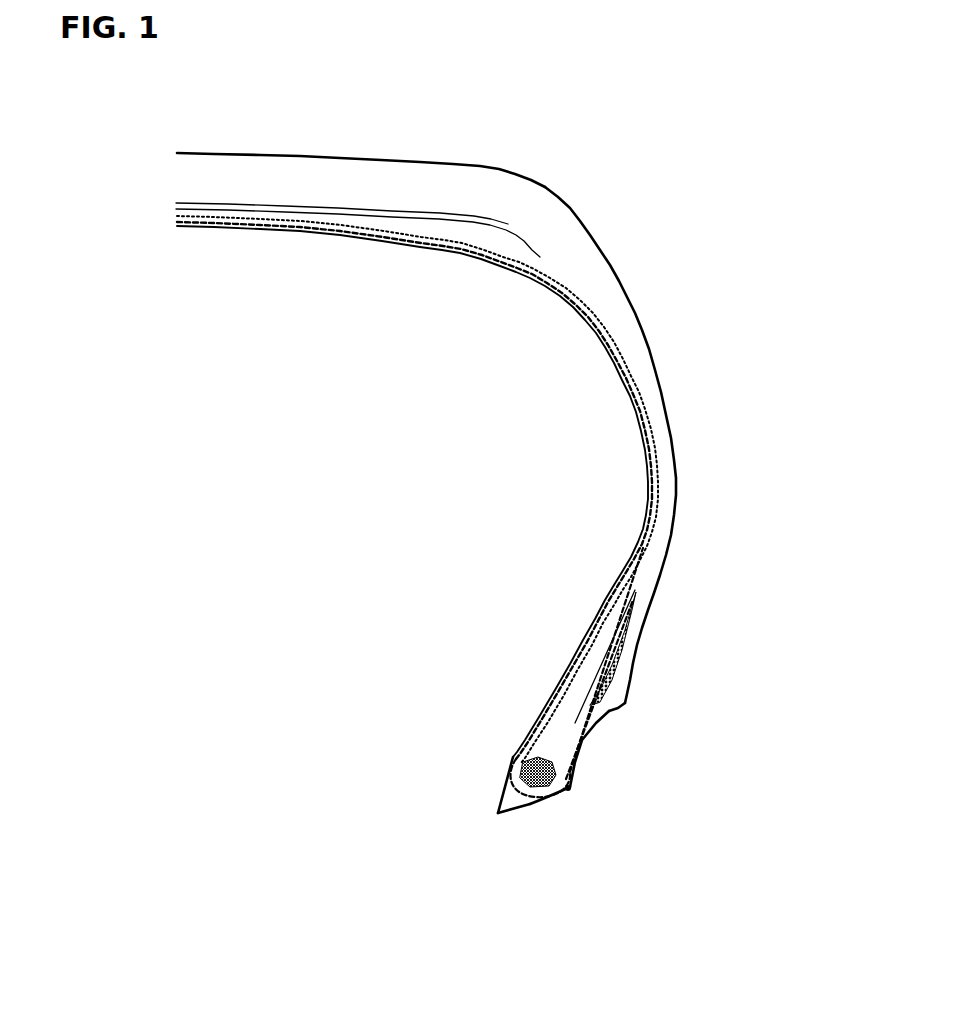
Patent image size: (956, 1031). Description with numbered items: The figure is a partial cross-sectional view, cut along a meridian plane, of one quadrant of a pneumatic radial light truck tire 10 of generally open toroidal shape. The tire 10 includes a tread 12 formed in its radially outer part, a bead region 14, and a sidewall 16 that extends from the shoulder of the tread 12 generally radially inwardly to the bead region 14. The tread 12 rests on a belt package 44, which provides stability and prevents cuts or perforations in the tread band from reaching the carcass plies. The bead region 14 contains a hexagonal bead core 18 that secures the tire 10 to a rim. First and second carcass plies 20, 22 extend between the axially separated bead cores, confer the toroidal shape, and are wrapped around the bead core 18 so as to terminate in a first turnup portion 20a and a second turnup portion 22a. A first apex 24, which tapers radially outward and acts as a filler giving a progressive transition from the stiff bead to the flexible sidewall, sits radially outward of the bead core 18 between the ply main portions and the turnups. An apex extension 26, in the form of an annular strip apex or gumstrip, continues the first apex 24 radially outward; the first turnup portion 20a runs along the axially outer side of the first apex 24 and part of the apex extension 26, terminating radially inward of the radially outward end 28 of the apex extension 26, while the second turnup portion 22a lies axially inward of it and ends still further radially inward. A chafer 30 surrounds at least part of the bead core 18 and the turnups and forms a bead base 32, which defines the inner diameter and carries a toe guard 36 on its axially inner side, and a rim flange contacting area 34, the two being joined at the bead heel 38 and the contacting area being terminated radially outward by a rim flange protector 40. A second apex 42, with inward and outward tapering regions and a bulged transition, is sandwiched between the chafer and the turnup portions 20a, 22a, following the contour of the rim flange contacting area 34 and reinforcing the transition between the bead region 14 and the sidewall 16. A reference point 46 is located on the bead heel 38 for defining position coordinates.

The pneumatic radial light truck tire 10 is at (638, 181).
The tread 12 is at (240, 153).
The bead region 14 is at (513, 665).
The sidewall 16 is at (667, 400).
The bead core 18 is at (521, 772).
The first carcass ply 20 is at (502, 263).
The first turnup portion 20a is at (645, 570).
The second carcass ply 22 is at (600, 308).
The second turnup portion 22a is at (628, 600).
The first apex 24 is at (510, 748).
The apex extension 26 is at (655, 520).
The radially outward end of the apex extension 28 is at (658, 490).
The chafer 30 is at (583, 738).
The bead base 32 is at (530, 810).
The rim flange contacting area 34 is at (600, 720).
The toe guard 36 is at (507, 817).
The bead heel 38 is at (583, 787).
The rim flange protector 40 is at (611, 711).
The second apex 42 is at (610, 683).
The belt package 44 is at (465, 213).
The reference point 46 is at (570, 800).